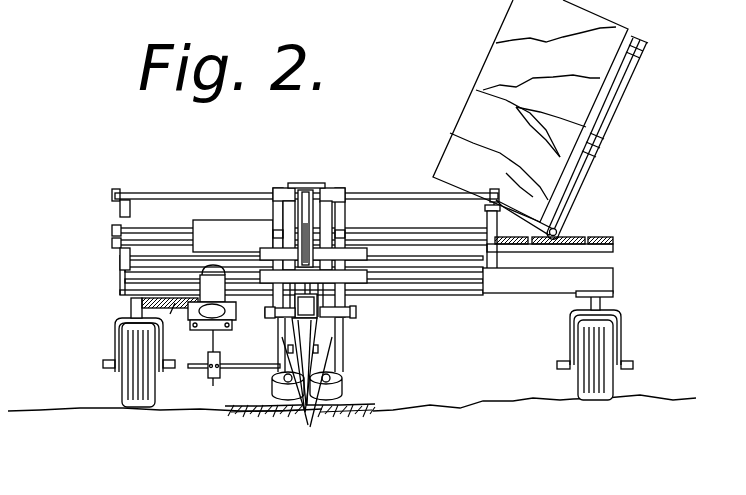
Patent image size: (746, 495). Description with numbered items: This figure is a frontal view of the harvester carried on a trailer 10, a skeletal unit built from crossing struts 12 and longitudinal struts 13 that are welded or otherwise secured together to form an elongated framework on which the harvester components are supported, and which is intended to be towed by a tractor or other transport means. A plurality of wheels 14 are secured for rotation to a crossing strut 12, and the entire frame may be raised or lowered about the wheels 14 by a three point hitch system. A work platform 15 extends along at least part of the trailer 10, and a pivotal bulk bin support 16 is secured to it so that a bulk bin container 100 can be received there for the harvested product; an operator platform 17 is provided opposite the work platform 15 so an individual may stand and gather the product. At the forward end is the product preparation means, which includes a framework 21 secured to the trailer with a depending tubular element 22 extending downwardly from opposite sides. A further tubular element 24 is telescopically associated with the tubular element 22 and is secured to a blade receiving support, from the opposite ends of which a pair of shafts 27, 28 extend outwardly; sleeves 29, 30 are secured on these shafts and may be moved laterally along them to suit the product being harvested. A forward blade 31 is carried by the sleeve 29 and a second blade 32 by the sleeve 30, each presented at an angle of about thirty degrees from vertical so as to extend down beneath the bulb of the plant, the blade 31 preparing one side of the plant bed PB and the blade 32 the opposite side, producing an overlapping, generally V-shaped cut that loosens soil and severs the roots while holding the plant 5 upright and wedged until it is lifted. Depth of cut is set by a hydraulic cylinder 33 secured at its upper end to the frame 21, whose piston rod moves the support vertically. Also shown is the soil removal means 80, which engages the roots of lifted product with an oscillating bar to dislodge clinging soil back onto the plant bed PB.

The plant seedling 5 is at (331, 431).
The trailer 10 is at (415, 242).
The crossing struts 12 is at (577, 281).
The longitudinal struts 13 is at (85, 235).
The wheels 14 is at (367, 349).
The work platform 15 is at (582, 228).
The pivotal bulk bin support 16 is at (612, 137).
The operator platform 17 is at (189, 309).
The framework 21 is at (318, 169).
The depending tubular element 22 is at (292, 217).
The further tubular element 24 is at (362, 306).
The shaft 27 is at (374, 318).
The shaft 28 is at (263, 326).
The sleeve 29 is at (360, 345).
The sleeve 30 is at (264, 343).
The blade 31 is at (342, 372).
The blade 32 is at (352, 425).
The hydraulic cylinder 33 is at (350, 242).
The soil removal means 80 is at (198, 377).
The bulk bin container 100 is at (561, 111).
The plant bed PB is at (335, 394).